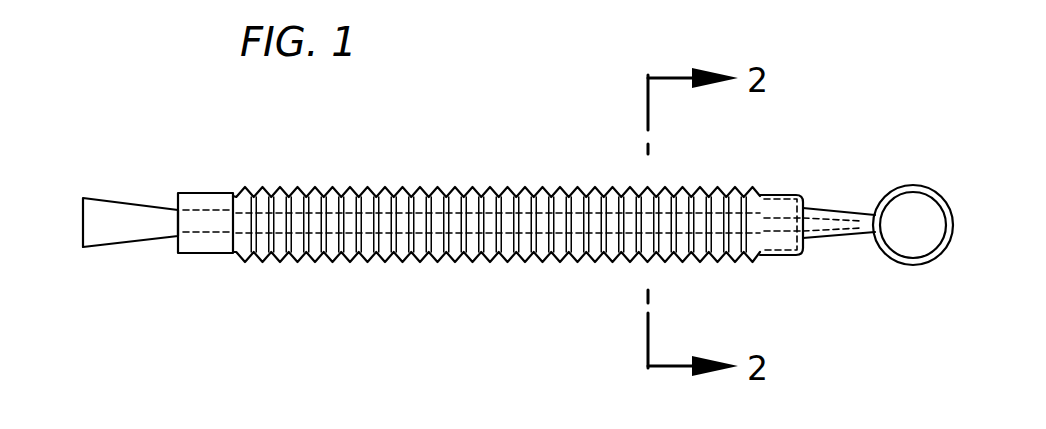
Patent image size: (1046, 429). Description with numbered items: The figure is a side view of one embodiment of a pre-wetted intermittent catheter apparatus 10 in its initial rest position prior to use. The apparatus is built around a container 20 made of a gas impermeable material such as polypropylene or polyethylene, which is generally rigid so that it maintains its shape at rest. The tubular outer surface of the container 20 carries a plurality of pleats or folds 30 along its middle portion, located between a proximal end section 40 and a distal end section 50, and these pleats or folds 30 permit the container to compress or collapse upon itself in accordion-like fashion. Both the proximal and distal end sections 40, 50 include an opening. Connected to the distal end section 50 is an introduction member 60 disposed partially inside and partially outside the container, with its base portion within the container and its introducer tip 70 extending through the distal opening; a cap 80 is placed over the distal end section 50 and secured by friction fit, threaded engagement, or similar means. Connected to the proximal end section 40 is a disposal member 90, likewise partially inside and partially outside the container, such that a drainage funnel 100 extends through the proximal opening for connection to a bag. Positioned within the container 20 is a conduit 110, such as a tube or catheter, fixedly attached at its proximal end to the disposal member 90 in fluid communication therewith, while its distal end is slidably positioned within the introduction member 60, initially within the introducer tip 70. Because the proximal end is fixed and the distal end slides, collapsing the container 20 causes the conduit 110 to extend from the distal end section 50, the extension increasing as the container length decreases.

The catheter apparatus 10 is at (522, 84).
The container 20 is at (497, 192).
The pleats or folds 30 is at (507, 262).
The proximal end section 40 is at (160, 258).
The distal end section 50 is at (852, 288).
The introduction member 60 is at (794, 196).
The introducer tip 70 is at (851, 213).
The cap 80 is at (818, 257).
The disposal member 90 is at (155, 198).
The drainage funnel 100 is at (116, 200).
The conduit 110 is at (381, 238).